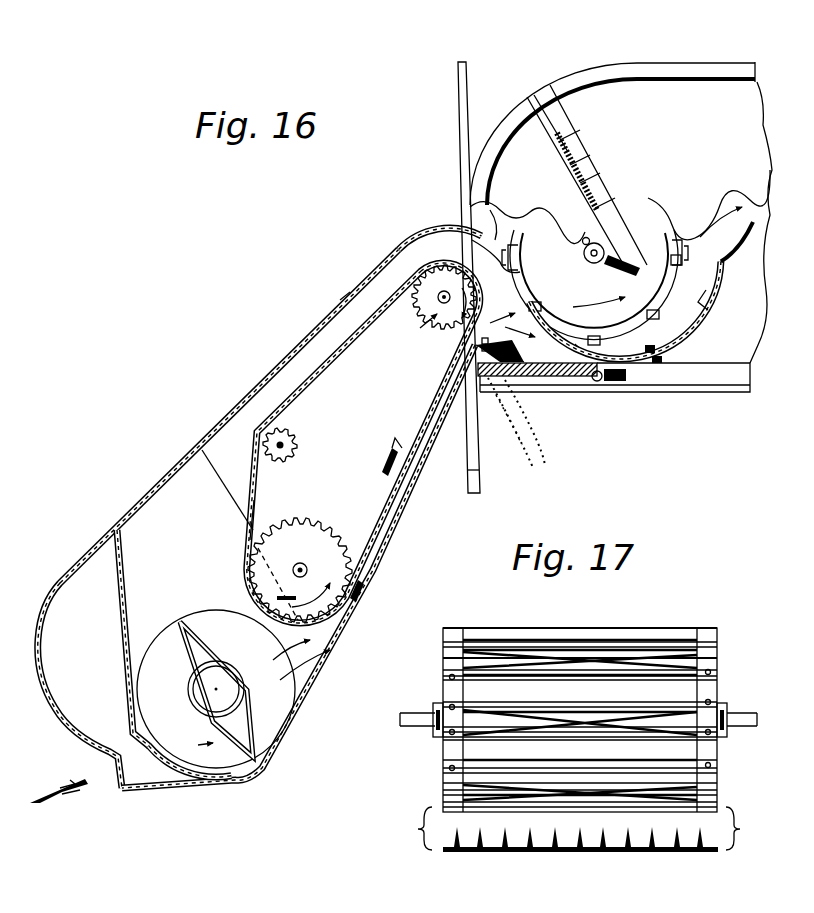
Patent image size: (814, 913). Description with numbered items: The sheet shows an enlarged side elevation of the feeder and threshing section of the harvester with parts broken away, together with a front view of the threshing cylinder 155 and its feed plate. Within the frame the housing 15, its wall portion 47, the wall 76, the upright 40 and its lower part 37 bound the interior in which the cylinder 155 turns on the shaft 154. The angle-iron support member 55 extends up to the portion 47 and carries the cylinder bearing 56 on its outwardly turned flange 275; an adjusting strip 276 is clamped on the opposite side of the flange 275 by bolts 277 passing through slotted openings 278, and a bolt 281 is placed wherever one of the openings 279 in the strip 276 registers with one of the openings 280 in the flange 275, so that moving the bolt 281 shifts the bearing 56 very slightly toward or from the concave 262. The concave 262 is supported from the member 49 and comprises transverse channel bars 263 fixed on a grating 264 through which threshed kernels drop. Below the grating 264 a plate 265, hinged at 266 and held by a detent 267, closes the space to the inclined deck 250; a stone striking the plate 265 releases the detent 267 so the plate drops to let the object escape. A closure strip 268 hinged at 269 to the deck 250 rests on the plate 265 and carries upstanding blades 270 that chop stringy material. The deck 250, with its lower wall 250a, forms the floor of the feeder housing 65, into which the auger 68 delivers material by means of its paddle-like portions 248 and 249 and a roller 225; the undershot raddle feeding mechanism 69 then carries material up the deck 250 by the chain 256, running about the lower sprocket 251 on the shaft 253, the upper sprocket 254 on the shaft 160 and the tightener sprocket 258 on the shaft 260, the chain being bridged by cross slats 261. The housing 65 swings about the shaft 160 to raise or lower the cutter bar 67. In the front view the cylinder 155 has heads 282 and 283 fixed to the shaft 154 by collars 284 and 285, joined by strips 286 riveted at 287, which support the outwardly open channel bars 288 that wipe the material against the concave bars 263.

In FIG. 16, the housing 15 is at (642, 72).
In FIG. 16, the portion 47 is at (690, 70).
In FIG. 16, the housing side wall 76 is at (710, 88).
In FIG. 16, the upright frame post 40 is at (466, 100).
In FIG. 16, the frame post lower portion 37 is at (478, 476).
In FIG. 16, the support member 55 is at (565, 137).
In FIG. 16, the outwardly turned flange 275 is at (555, 142).
In FIG. 16, the openings 279 is at (568, 162).
In FIG. 16, the openings 280 is at (572, 180).
In FIG. 16, the adjusting strip 276 is at (588, 184).
In FIG. 16, the bolts 277 is at (600, 207).
In FIG. 16, the bolt 281 is at (590, 216).
In FIG. 16, the slotted openings 278 is at (620, 272).
In FIG. 16, the shaft 154 is at (584, 256).
In FIG. 17, the shaft 154 is at (741, 708).
In FIG. 16, the cylinder bearing 56 is at (582, 243).
In FIG. 16, the cylinder 155 is at (745, 208).
In FIG. 17, the cylinder 155 is at (690, 626).
In FIG. 16, the head 283 is at (705, 266).
In FIG. 17, the head 283 is at (712, 685).
In FIG. 16, the concave 262 is at (700, 300).
In FIG. 16, the channel bars 288 is at (522, 300).
In FIG. 17, the channel bars 288 is at (637, 628).
In FIG. 16, the strips 286 is at (535, 306).
In FIG. 17, the strips 286 is at (443, 642).
In FIG. 16, the channel bars 263 is at (656, 349).
In FIG. 16, the grating 264 is at (662, 360).
In FIG. 16, the closure strip 268 is at (518, 356).
In FIG. 17, the closure strip 268 is at (662, 850).
In FIG. 16, the upstanding blades 270 is at (480, 340).
In FIG. 17, the upstanding blades 270 is at (497, 852).
In FIG. 16, the hinge 269 is at (480, 348).
In FIG. 16, the plate 265 is at (560, 372).
In FIG. 16, the hinge 266 is at (488, 382).
In FIG. 16, the detent 267 is at (613, 383).
In FIG. 16, the member 49 is at (670, 372).
In FIG. 16, the inclined deck 250 is at (420, 497).
In FIG. 16, the conveyor housing lower wall 250a is at (137, 543).
In FIG. 16, the chain 256 is at (262, 382).
In FIG. 16, the cross slats 261 is at (357, 327).
In FIG. 16, the feeder housing 65 is at (333, 302).
In FIG. 16, the shaft 160 is at (447, 289).
In FIG. 16, the upper sprocket 254 is at (428, 332).
In FIG. 16, the feeding mechanism 69 is at (245, 560).
In FIG. 16, the tightener sprocket 258 is at (297, 440).
In FIG. 16, the shaft 260 is at (296, 452).
In FIG. 16, the lower sprocket 251 is at (308, 535).
In FIG. 16, the shaft 253 is at (304, 566).
In FIG. 16, the paddle-like portion 248 is at (212, 598).
In FIG. 16, the roller 225 is at (230, 675).
In FIG. 16, the auger 68 is at (152, 640).
In FIG. 16, the cutter bar 67 is at (63, 783).
In FIG. 16, the paddle-like portion 249 is at (282, 743).
In FIG. 17, the head 282 is at (450, 692).
In FIG. 17, the collar 284 is at (435, 733).
In FIG. 17, the collar 285 is at (727, 735).
In FIG. 17, the rivets 287 is at (455, 642).